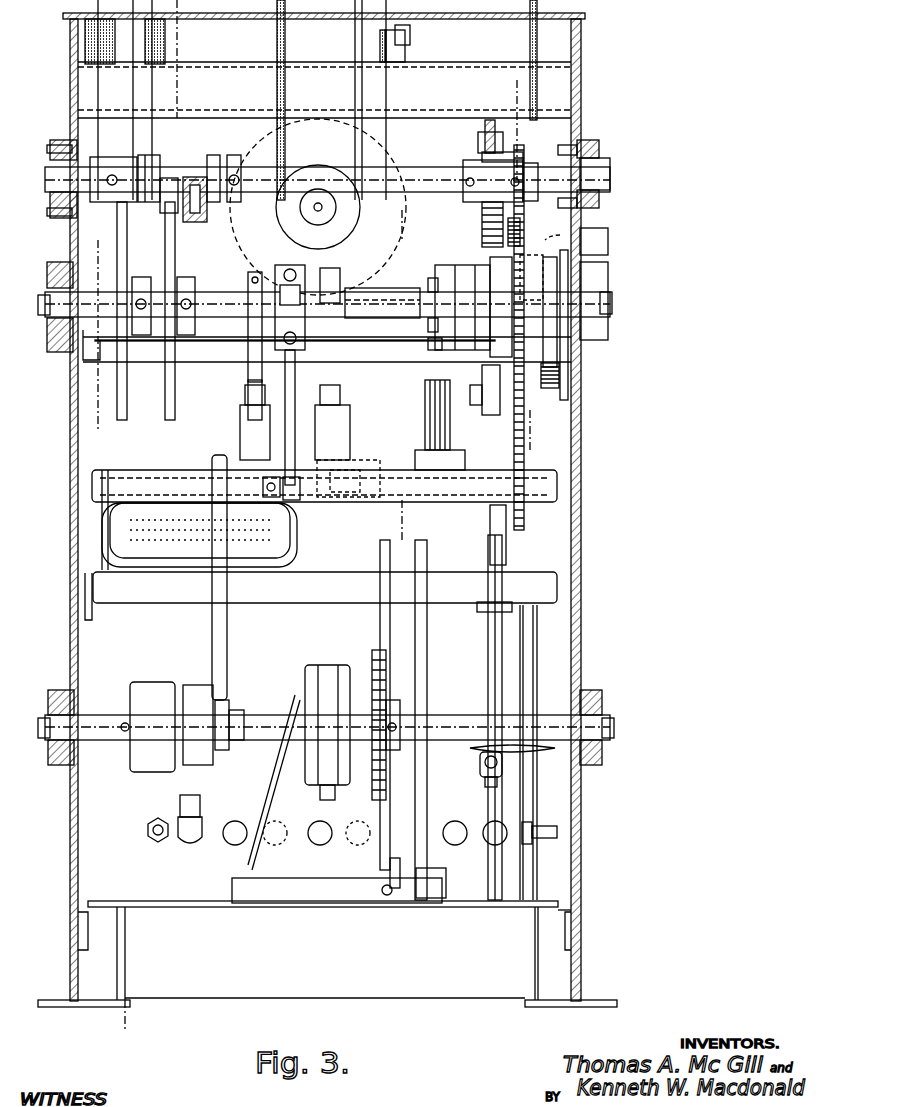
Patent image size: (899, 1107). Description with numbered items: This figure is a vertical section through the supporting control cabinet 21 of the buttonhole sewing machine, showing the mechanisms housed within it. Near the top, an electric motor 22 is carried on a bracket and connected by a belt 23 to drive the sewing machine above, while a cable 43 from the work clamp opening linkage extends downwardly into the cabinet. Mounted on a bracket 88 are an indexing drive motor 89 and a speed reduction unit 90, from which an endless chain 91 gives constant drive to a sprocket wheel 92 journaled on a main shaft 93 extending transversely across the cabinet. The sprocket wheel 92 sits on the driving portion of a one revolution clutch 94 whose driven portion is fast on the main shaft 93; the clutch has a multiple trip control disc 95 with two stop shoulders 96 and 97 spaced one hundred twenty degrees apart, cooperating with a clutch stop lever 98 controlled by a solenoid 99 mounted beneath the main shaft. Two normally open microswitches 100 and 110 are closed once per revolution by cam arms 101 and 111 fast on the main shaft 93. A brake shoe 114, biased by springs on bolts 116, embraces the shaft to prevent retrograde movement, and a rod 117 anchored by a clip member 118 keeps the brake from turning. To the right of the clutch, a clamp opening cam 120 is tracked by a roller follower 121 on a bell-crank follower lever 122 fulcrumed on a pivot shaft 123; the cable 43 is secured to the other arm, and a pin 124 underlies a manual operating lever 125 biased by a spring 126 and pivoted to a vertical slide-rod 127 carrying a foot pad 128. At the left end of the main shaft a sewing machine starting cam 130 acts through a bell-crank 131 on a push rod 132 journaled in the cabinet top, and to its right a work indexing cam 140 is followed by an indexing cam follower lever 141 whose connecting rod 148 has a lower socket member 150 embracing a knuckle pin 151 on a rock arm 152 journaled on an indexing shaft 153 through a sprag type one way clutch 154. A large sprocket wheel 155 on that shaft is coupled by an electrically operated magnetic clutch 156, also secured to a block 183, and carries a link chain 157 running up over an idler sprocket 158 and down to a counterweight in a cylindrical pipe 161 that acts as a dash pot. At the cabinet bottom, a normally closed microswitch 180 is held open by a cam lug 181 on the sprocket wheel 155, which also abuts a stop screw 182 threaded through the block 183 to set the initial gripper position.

The cabinet 21 is at (582, 501).
The electric motor 22 is at (240, 153).
The belt 23 is at (276, 35).
The cable 43 is at (533, 42).
The bracket 88 is at (295, 600).
The indexing drive motor 89 is at (147, 413).
The speed reduction unit 90 is at (480, 525).
The endless chain 91 is at (524, 520).
The sprocket wheel 92 is at (502, 260).
The main shaft 93 is at (377, 294).
The one revolution clutch 94 is at (472, 268).
The multiple trip control disc 95 is at (447, 326).
The stop shoulder 96 is at (447, 357).
The stop shoulder 97 is at (447, 286).
The clutch stop lever 98 is at (420, 347).
The solenoid 99 is at (423, 414).
The microswitch 100 is at (243, 405).
The cam arm 101 is at (250, 342).
The microswitch 110 is at (340, 408).
The cam arm 111 is at (338, 275).
The brake shoe 114 is at (272, 274).
The bolts 116 is at (290, 267).
The rod 117 is at (292, 408).
The clip member 118 is at (295, 500).
The clamp opening cam 120 is at (560, 363).
The roller follower 121 is at (562, 253).
The bell-crank follower lever 122 is at (570, 237).
The pivot shaft 123 is at (427, 178).
The pin 124 is at (480, 148).
The manual operating lever 125 is at (488, 123).
The spring 126 is at (480, 225).
The vertical slide-rod 127 is at (486, 625).
The foot pad 128 is at (513, 758).
The sewing machine starting cam 130 is at (122, 274).
The bell-crank 131 is at (168, 232).
The push rod 132 is at (146, 138).
The work indexing cam 140 is at (180, 355).
The indexing cam follower lever 141 is at (207, 218).
The connecting rod 148 is at (213, 583).
The socket member 150 is at (228, 710).
The knuckle pin 151 is at (232, 746).
The rock arm 152 is at (195, 700).
The indexing shaft 153 is at (267, 718).
The sprag type one way clutch 154 is at (151, 693).
The large sprocket wheel 155 is at (405, 774).
The electrically operated magnetic clutch 156 is at (330, 678).
The link chain 157 is at (380, 565).
The idler sprocket 158 is at (403, 40).
The cylindrical pipe 161 is at (426, 666).
The microswitch 180 is at (428, 872).
The cam lug 181 is at (395, 860).
The stop screw 182 is at (388, 897).
The block 183 is at (317, 903).